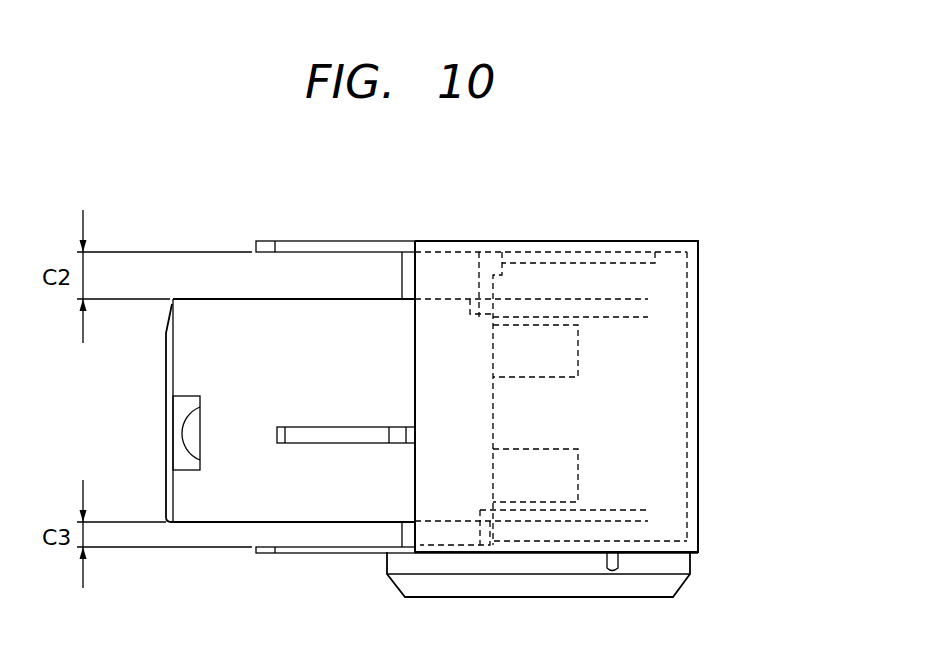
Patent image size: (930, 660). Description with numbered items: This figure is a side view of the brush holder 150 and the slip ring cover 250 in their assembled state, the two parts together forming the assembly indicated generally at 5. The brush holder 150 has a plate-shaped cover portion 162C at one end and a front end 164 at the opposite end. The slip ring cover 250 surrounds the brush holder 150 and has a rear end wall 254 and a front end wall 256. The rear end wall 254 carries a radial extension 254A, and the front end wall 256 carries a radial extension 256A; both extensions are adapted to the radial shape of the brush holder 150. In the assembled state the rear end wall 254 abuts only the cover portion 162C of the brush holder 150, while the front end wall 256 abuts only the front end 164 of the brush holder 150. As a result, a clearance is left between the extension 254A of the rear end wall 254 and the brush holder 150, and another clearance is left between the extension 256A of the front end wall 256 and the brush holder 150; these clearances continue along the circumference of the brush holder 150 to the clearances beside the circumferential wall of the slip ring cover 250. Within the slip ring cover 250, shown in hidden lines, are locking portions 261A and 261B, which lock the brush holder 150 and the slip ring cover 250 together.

The connector assembly 5 is at (656, 182).
The brush holder 150 is at (258, 299).
The cover portion 162C is at (443, 252).
The front end 164 is at (457, 545).
The slip ring cover 250 is at (660, 241).
The rear end wall 254 is at (487, 241).
The radial extension 254A is at (320, 240).
The front end wall 256 is at (663, 552).
The radial extension 256A is at (335, 556).
The locking portion 261A is at (618, 398).
The locking portion 261B is at (600, 303).